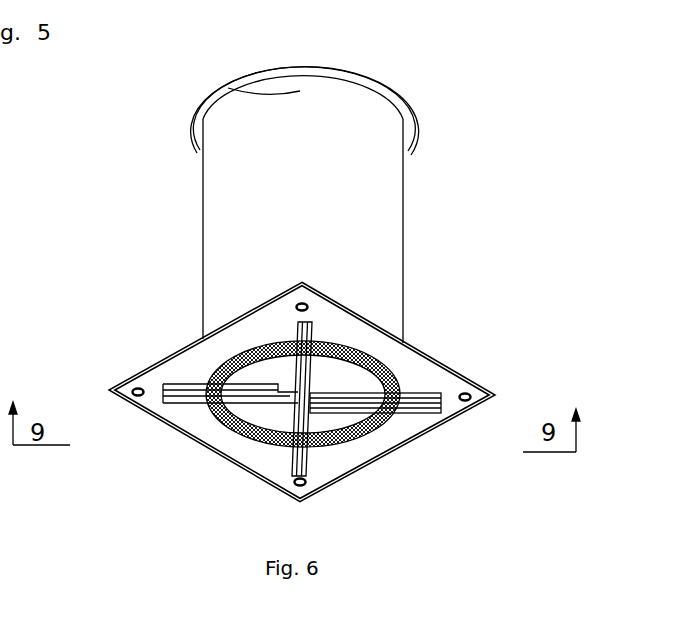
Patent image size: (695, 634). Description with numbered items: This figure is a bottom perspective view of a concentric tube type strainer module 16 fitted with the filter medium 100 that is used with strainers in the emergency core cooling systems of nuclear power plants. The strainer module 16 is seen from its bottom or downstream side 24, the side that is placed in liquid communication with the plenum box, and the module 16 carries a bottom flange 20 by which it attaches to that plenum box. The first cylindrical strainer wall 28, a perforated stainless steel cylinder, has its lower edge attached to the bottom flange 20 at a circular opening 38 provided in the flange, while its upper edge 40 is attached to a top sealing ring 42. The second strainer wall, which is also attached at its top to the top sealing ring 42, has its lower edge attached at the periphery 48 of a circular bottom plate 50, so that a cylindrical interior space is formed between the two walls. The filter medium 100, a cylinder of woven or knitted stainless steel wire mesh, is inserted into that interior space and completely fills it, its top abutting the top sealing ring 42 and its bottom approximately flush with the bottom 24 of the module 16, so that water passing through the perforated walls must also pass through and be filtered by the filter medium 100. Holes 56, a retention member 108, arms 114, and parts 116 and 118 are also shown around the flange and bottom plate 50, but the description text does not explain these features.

The concentric tube type strainer module 16 is at (382, 81).
The bottom flange 20 is at (383, 453).
The bottom or downstream side 24 is at (326, 487).
The first cylindrical strainer wall 28 is at (403, 228).
The circular opening 38 is at (323, 447).
The upper edge 40 is at (216, 89).
The top sealing ring 42 is at (335, 67).
The periphery 48 is at (335, 346).
The circular bottom plate 50 is at (270, 368).
The mounting holes 56 is at (300, 305).
The filter medium 100 is at (288, 452).
The arm end 108 is at (170, 383).
The arms 114 is at (312, 325).
The left arm 116 is at (245, 424).
The right arm 118 is at (420, 393).